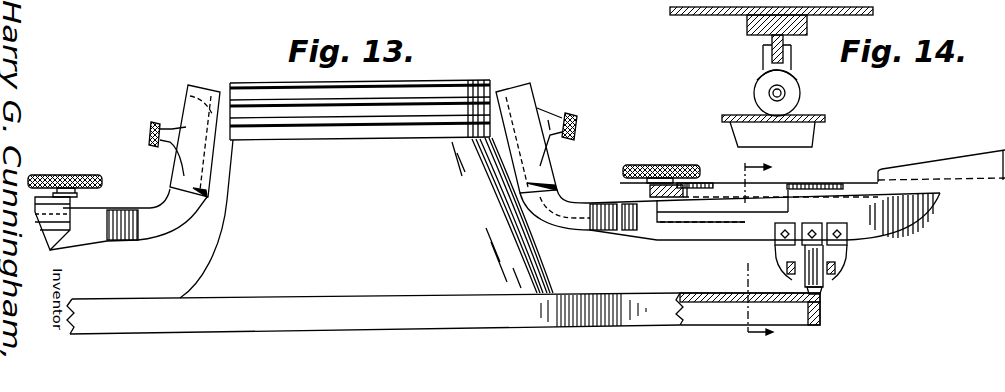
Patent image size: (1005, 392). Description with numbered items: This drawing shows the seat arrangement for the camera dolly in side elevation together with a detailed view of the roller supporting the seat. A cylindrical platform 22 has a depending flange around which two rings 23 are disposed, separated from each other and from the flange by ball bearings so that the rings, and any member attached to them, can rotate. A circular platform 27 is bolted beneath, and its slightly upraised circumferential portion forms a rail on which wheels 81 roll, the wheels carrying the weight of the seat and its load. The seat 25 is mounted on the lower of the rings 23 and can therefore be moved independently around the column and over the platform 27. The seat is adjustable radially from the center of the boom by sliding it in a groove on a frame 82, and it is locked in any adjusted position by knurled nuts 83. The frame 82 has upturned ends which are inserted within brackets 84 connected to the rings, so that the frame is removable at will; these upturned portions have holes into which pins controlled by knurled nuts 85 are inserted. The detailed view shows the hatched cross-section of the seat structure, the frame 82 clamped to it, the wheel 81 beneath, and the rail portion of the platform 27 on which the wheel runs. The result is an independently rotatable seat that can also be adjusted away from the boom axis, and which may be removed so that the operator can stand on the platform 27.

In FIG. 13, the cylindrical platform 22 is at (453, 83).
In FIG. 13, the rings 23 is at (263, 113).
In FIG. 13, the seat 25 is at (1003, 150).
In FIG. 14, the seat 25 is at (689, 17).
In FIG. 14, the circular platform 27 is at (812, 133).
In FIG. 13, the wheels 81 is at (835, 268).
In FIG. 14, the wheels 81 is at (794, 99).
In FIG. 13, the frame 82 is at (148, 207).
In FIG. 14, the frame 82 is at (763, 38).
In FIG. 13, the knurled nuts 83 is at (99, 175).
In FIG. 13, the brackets 84 is at (189, 88).
In FIG. 13, the knurled nuts 85 is at (159, 123).